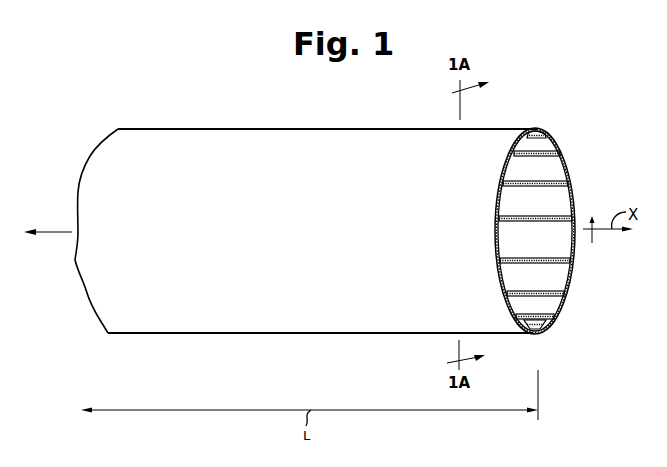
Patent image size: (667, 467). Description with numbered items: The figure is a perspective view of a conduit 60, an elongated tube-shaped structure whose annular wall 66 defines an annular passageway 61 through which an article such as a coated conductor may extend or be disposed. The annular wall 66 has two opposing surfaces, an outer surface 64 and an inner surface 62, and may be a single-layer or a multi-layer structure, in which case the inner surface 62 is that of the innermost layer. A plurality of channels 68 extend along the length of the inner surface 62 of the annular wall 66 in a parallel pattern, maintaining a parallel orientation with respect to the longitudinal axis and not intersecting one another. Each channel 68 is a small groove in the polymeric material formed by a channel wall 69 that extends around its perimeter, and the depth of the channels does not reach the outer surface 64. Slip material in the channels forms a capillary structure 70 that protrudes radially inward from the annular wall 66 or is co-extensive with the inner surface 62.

The conduit 60 is at (200, 230).
The annular passageway 61 is at (562, 247).
The inner surface 62 is at (553, 167).
The outer surface 64 is at (176, 140).
The annular wall 66 is at (538, 127).
The channel 68 is at (555, 147).
The channel wall 69 is at (567, 297).
The capillary structure 70 is at (548, 216).